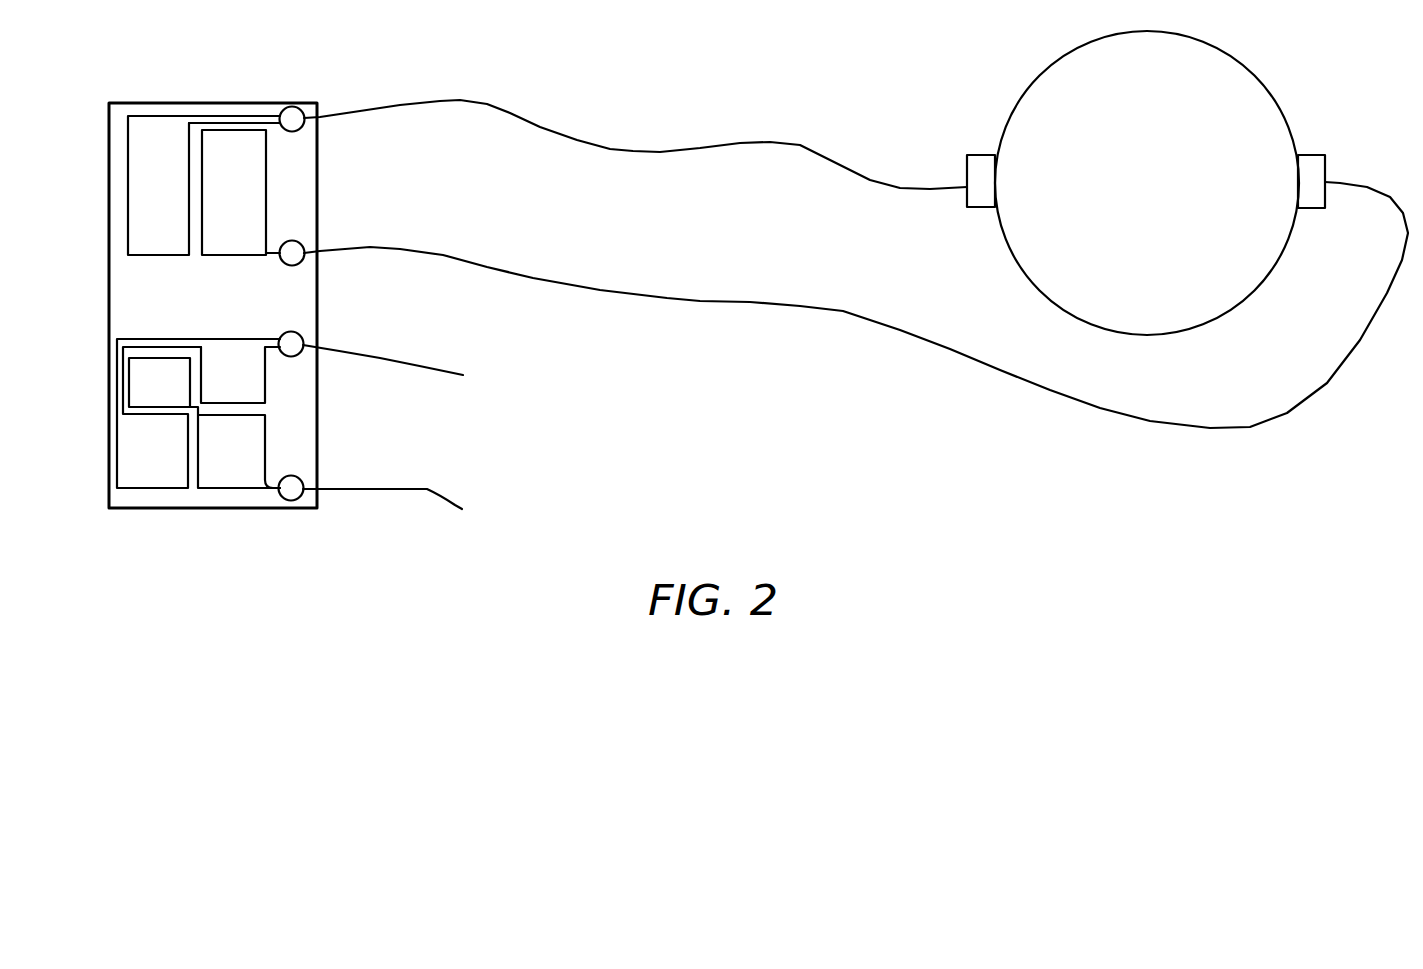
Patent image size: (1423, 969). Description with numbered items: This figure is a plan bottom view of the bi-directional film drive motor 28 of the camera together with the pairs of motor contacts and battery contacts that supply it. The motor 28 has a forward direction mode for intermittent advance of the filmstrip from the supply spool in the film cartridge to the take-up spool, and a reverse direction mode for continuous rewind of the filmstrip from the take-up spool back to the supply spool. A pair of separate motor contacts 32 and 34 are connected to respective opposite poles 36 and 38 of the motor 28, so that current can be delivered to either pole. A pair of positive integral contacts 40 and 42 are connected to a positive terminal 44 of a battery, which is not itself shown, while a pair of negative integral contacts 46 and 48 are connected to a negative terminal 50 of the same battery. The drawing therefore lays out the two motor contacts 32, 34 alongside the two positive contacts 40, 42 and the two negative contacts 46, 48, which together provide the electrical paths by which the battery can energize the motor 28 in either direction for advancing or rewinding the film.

The bi-directional film drive motor 28 is at (1165, 140).
The motor contact 32 is at (157, 127).
The motor contact 34 is at (253, 182).
The motor pole 36 is at (978, 154).
The motor pole 38 is at (1313, 154).
The positive integral contact 40 is at (127, 463).
The positive integral contact 42 is at (257, 392).
The positive terminal 44 is at (478, 368).
The negative integral contact 46 is at (135, 382).
The negative integral contact 48 is at (232, 480).
The negative terminal 50 is at (460, 495).